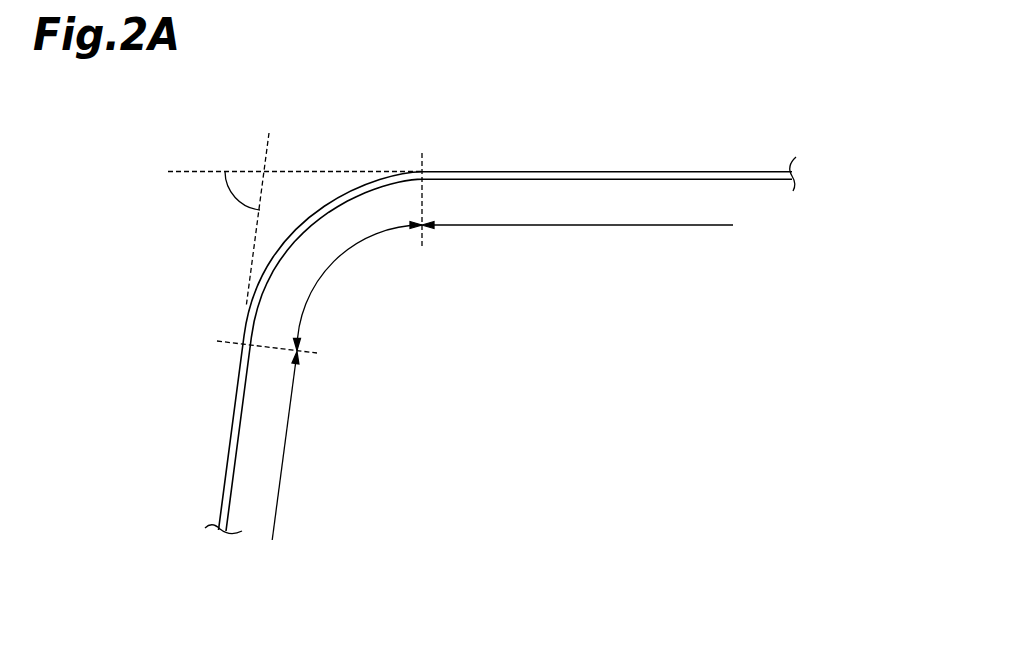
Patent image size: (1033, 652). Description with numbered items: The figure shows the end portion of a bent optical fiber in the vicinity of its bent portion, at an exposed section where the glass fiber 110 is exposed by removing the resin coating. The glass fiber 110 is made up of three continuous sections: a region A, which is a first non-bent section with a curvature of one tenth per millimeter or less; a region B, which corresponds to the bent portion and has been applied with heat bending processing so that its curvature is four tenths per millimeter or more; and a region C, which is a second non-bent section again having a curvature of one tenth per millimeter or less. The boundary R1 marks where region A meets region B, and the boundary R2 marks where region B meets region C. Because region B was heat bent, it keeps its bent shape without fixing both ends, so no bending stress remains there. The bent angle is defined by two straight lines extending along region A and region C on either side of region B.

The glass fiber 110 is at (662, 172).
The boundary between region A and region B R1 is at (192, 339).
The boundary between region B and region C R2 is at (422, 128).
The region A is at (280, 465).
The region B is at (347, 265).
The region C is at (617, 225).